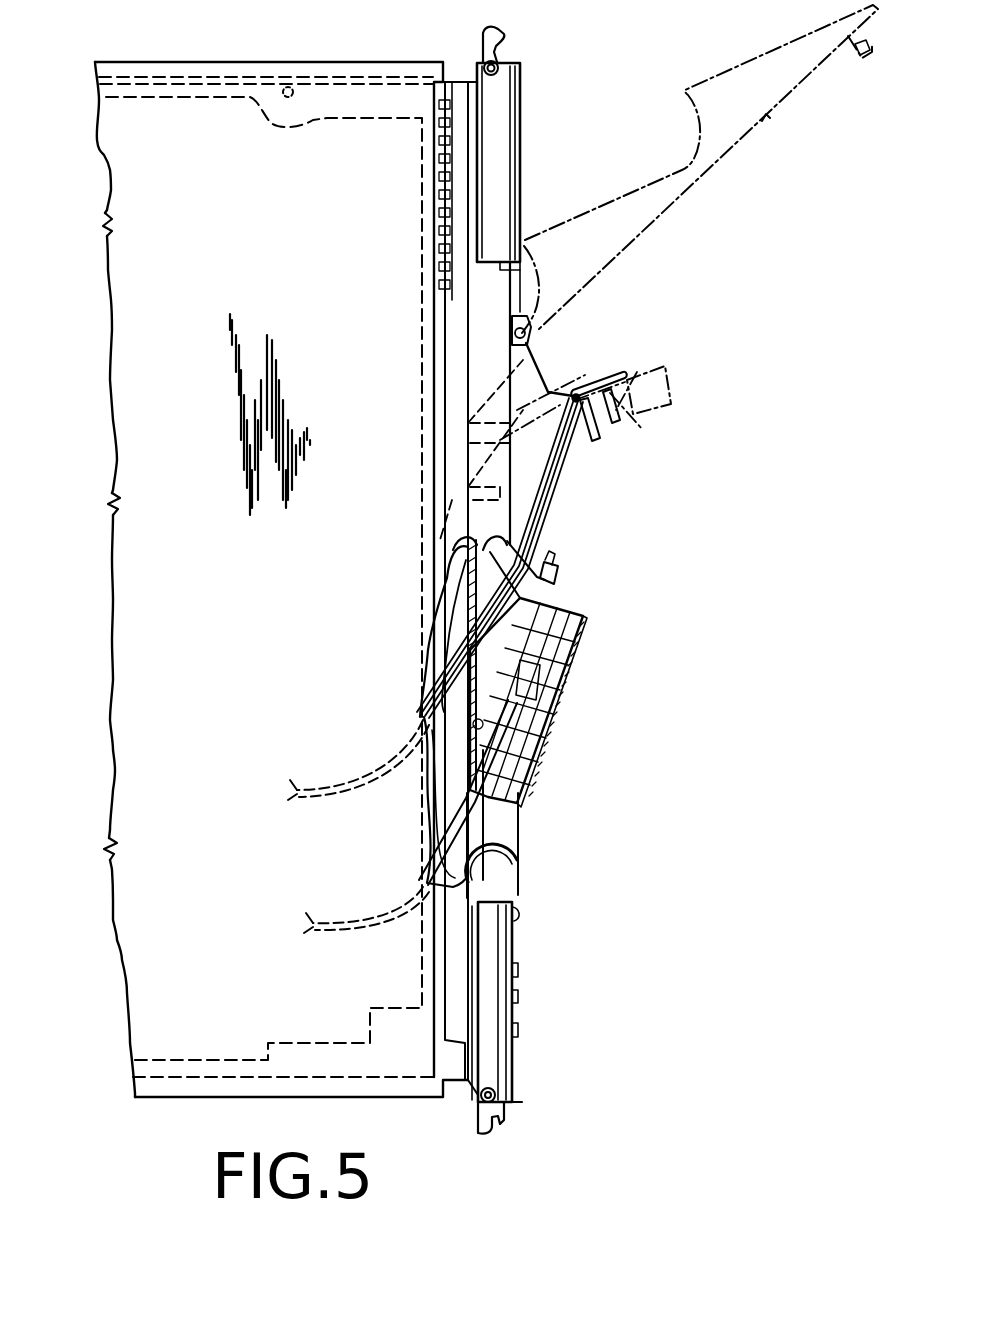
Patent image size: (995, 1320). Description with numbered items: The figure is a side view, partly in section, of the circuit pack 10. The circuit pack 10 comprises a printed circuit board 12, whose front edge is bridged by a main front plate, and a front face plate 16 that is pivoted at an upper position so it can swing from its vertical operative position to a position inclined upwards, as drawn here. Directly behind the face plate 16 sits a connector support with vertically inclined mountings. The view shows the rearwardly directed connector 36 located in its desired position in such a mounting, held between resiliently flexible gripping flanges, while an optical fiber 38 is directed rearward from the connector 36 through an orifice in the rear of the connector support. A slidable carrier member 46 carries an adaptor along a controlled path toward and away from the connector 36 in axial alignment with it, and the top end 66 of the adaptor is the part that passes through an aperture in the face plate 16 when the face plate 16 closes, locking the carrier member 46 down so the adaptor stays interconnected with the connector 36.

The circuit pack 10 is at (112, 780).
The printed circuit board 12 is at (143, 641).
The front face plate 16 is at (740, 80).
The connector 36 is at (527, 680).
The optical fiber 38 is at (427, 660).
The carrier member 46 is at (637, 373).
The top end 66 is at (660, 408).